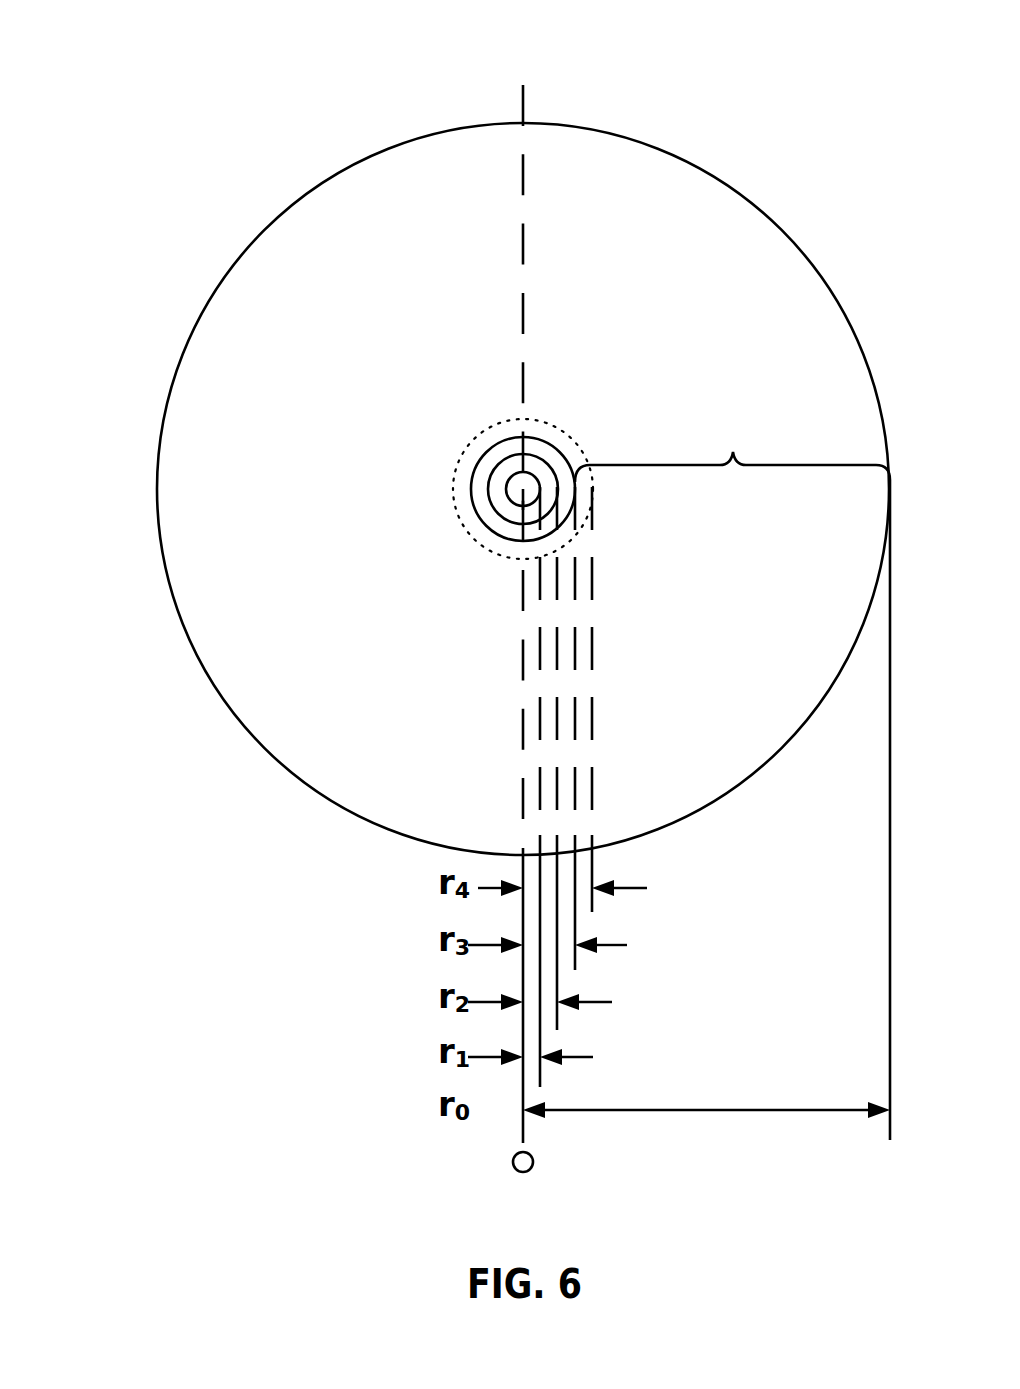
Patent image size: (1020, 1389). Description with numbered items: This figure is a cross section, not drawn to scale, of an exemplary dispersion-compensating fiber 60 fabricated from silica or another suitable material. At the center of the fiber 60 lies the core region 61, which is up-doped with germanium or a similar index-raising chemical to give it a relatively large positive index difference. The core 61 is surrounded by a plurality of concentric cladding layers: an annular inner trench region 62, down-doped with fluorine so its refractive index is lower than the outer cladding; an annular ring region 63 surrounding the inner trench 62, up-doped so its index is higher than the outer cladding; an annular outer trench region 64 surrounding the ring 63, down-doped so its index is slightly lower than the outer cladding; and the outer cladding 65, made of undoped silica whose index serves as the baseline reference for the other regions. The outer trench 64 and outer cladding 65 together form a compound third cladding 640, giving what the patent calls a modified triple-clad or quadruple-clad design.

The dispersion-compensating fiber 60 is at (505, 34).
The core region 61 is at (518, 490).
The inner trench region 62 is at (502, 488).
The ring region 63 is at (482, 488).
The outer trench region 64 is at (466, 490).
The outer cladding 65 is at (355, 482).
The compound third cladding 640 is at (732, 781).